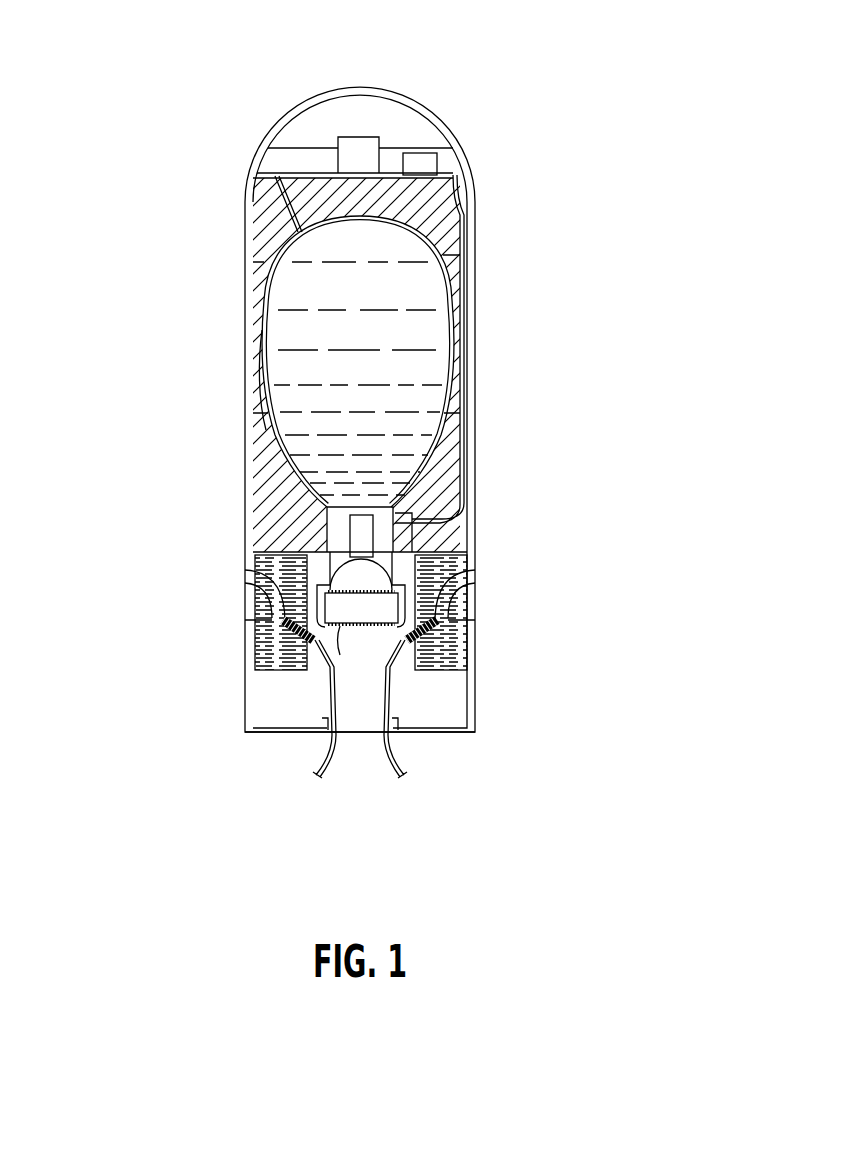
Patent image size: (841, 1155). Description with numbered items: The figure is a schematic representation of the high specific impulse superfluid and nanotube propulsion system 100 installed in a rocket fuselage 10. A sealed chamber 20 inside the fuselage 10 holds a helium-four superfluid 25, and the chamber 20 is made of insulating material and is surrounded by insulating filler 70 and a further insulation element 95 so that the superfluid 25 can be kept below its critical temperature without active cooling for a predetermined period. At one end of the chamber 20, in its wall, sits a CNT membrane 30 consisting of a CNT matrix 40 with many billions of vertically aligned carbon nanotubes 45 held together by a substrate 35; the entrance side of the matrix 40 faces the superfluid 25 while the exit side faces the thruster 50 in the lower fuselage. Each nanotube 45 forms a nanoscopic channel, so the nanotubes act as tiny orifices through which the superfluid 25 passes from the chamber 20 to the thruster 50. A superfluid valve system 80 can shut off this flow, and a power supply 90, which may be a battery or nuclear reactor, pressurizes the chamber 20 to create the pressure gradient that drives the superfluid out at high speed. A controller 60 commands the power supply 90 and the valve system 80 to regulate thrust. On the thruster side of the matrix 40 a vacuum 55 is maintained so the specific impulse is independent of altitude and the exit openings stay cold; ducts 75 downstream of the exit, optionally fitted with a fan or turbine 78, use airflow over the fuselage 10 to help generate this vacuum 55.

The high specific impulse superfluid and nanotube propulsion system 100 is at (173, 167).
The rocket fuselage 10 is at (394, 148).
The power supply 90 is at (347, 152).
The controller 60 is at (418, 163).
The insulation element 95 is at (265, 325).
The sealed chamber 20 is at (427, 300).
The helium-4 superfluid 25 is at (395, 372).
The insulating filler 70 is at (273, 478).
The superfluid valve system 80 is at (340, 532).
The carbon nanotubes 45 is at (377, 592).
The CNT membrane 30 is at (406, 598).
The ducts 75 is at (290, 626).
The fan or turbine 78 is at (437, 628).
The substrate 35 is at (373, 615).
The CNT matrix 40 is at (333, 648).
The thruster 50 is at (403, 757).
The vacuum 55 is at (352, 693).